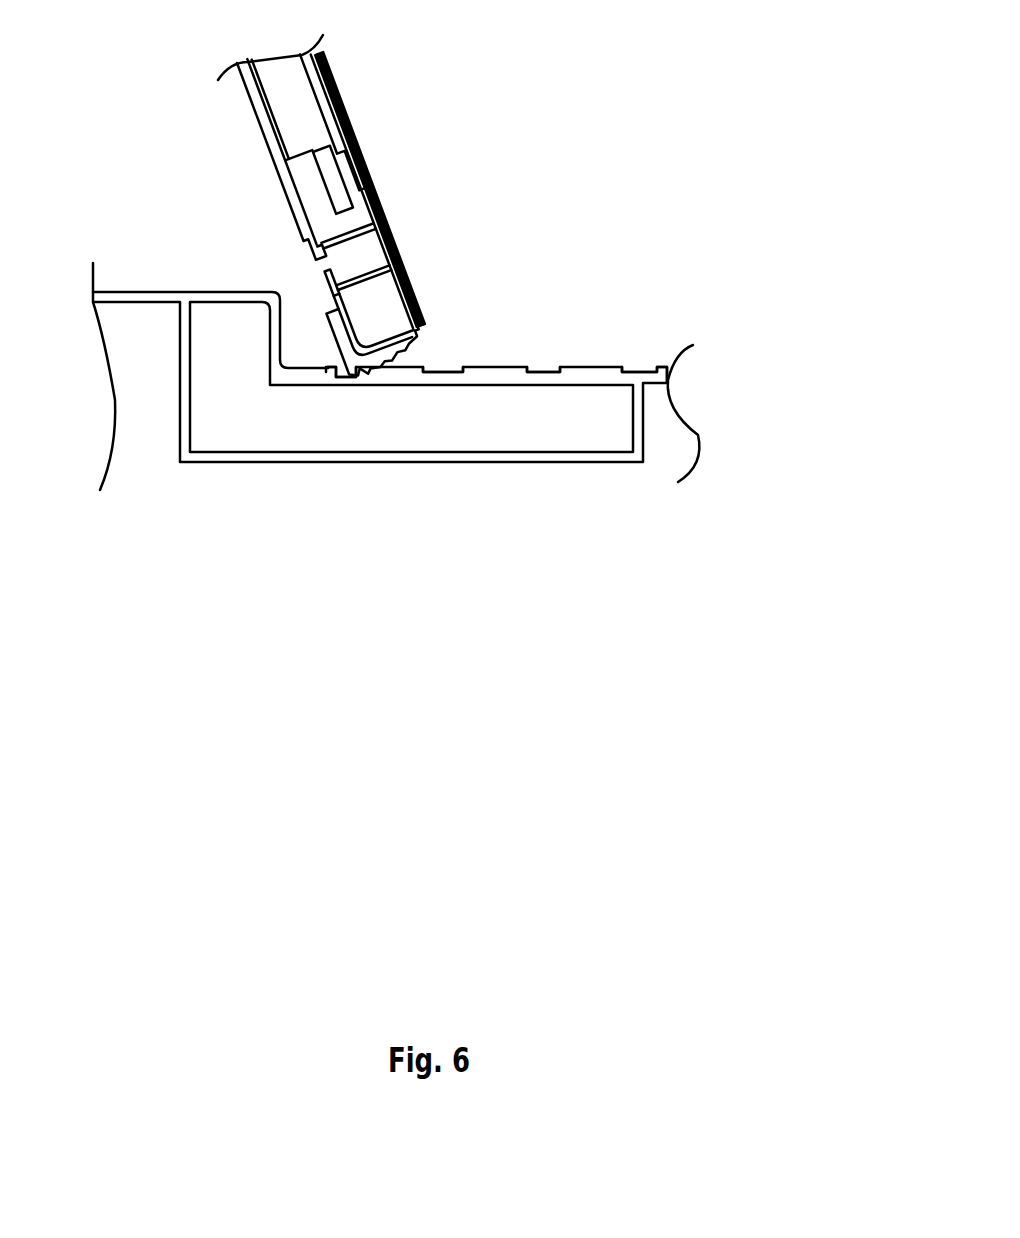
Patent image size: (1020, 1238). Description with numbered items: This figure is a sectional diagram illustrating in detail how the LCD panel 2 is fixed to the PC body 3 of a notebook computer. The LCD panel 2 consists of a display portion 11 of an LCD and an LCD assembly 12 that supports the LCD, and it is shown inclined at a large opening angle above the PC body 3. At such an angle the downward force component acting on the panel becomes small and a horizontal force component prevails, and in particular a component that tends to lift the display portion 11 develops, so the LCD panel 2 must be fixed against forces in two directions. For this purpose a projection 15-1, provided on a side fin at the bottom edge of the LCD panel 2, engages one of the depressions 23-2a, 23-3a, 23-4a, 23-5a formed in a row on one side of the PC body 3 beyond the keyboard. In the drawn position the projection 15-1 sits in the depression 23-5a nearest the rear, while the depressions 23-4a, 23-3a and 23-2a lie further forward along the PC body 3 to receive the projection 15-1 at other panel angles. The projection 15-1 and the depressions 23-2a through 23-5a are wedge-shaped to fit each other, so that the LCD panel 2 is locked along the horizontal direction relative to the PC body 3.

The LCD panel 2 is at (321, 206).
The PC body 3 is at (231, 476).
The display portion 11 is at (347, 120).
The LCD assembly 12 is at (290, 207).
The projection 15-1 is at (352, 373).
The depression 23-2a is at (643, 380).
The depression 23-3a is at (546, 375).
The depression 23-4a is at (452, 383).
The depression 23-5a is at (333, 378).